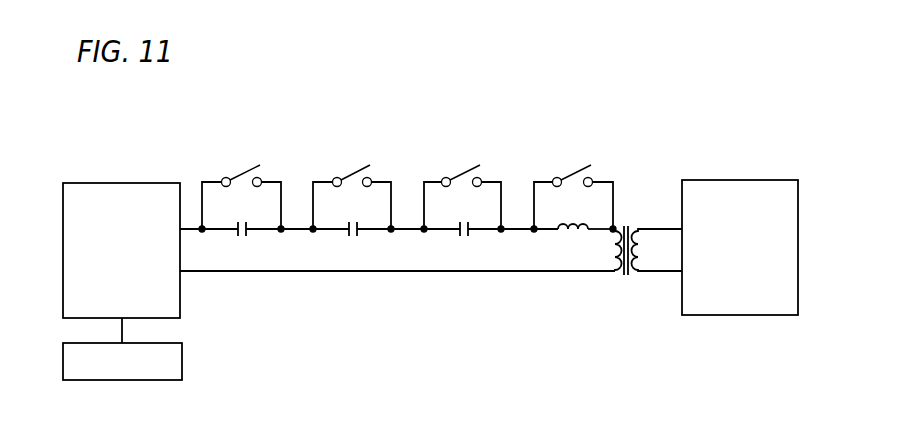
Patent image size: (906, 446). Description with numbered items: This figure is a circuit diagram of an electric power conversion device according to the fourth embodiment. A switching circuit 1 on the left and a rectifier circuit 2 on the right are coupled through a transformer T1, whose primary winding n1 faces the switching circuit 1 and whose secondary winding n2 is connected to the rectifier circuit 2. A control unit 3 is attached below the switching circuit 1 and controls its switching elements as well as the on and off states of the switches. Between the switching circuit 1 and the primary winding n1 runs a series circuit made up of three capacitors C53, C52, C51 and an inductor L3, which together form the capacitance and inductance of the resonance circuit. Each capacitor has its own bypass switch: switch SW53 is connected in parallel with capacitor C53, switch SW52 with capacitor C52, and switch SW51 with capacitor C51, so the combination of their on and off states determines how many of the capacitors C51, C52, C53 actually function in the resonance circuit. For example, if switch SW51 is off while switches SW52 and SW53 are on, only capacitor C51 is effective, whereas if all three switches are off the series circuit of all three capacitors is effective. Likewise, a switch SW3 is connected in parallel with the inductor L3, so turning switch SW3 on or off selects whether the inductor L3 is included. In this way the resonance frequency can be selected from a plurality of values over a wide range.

The switching circuit 1 is at (120, 188).
The rectifier circuit 2 is at (740, 186).
The control unit 3 is at (122, 381).
The switch SW53 is at (241, 182).
The switch SW52 is at (352, 182).
The switch SW51 is at (462, 182).
The switch SW3 is at (573, 182).
The capacitor C53 is at (240, 214).
The capacitor C52 is at (352, 214).
The capacitor C51 is at (463, 214).
The inductor L3 is at (573, 211).
The primary winding n1 is at (603, 250).
The secondary winding n2 is at (657, 250).
The transformer T1 is at (633, 265).